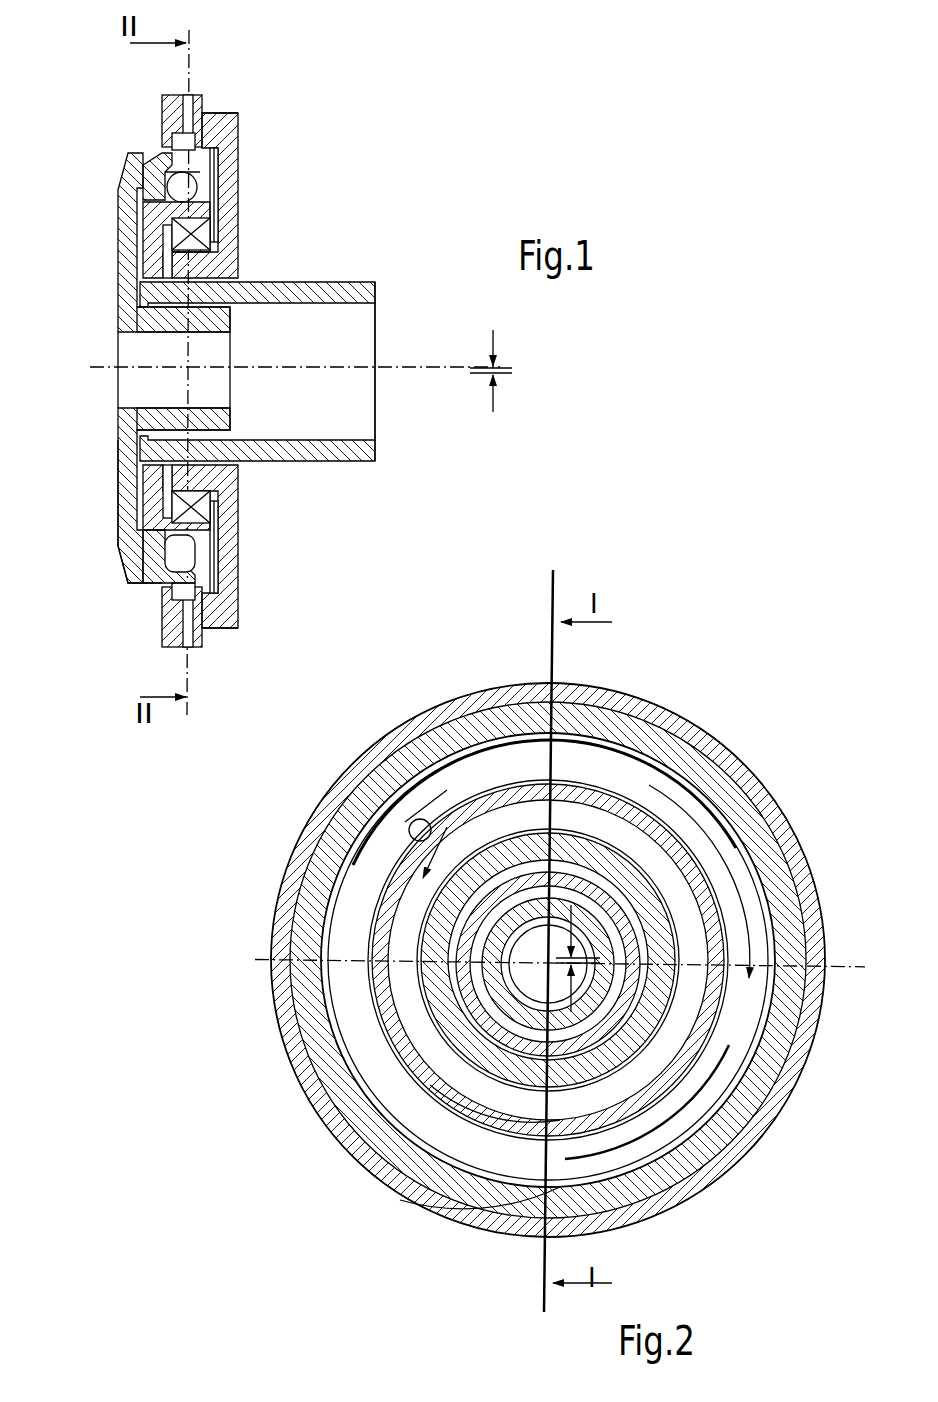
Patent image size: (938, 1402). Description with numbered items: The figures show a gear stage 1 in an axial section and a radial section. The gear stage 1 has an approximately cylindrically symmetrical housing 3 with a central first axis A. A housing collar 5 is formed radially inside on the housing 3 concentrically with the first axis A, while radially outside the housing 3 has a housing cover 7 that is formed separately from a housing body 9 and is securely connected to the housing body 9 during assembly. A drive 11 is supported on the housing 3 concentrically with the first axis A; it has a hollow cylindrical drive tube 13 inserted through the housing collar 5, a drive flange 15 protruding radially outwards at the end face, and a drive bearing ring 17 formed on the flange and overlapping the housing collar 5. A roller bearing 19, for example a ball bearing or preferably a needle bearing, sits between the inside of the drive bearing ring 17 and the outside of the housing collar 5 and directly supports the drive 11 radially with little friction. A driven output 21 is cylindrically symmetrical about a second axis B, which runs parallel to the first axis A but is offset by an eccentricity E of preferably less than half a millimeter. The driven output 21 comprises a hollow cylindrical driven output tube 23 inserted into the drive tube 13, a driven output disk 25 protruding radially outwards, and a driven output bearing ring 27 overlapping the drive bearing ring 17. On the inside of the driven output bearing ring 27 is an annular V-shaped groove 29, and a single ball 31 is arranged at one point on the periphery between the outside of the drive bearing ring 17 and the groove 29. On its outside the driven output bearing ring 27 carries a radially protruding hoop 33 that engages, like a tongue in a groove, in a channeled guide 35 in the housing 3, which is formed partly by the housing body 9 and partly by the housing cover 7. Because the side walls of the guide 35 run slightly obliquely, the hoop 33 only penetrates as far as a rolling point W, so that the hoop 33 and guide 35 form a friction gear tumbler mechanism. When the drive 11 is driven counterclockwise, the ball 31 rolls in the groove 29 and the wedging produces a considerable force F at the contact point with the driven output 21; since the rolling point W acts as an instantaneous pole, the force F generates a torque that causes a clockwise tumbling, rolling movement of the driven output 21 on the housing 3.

In FIG. 1, the gear stage 1 is at (350, 189).
In FIG. 1, the housing 3 is at (225, 105).
In FIG. 2, the housing 3 is at (700, 724).
In FIG. 1, the housing collar 5 is at (205, 268).
In FIG. 2, the housing collar 5 is at (450, 983).
In FIG. 1, the housing cover 7 is at (165, 105).
In FIG. 2, the housing cover 7 is at (545, 1205).
In FIG. 1, the housing body 9 is at (232, 215).
In FIG. 2, the housing body 9 is at (478, 1197).
In FIG. 1, the drive 11 is at (362, 465).
In FIG. 2, the drive 11 is at (609, 788).
In FIG. 1, the drive tube 13 is at (302, 452).
In FIG. 2, the drive tube 13 is at (445, 944).
In FIG. 1, the drive flange 15 is at (150, 495).
In FIG. 1, the drive bearing ring 17 is at (230, 527).
In FIG. 2, the drive bearing ring 17 is at (420, 1108).
In FIG. 1, the roller bearing 19 is at (215, 247).
In FIG. 2, the roller bearing 19 is at (460, 1062).
In FIG. 1, the driven output 21 is at (117, 297).
In FIG. 2, the driven output 21 is at (457, 1172).
In FIG. 1, the driven output tube 23 is at (173, 417).
In FIG. 2, the driven output tube 23 is at (745, 1060).
In FIG. 1, the driven output disk 25 is at (125, 480).
In FIG. 1, the driven output bearing ring 27 is at (155, 585).
In FIG. 2, the driven output bearing ring 27 is at (415, 1117).
In FIG. 1, the groove 29 is at (203, 543).
In FIG. 1, the ball 31 is at (220, 150).
In FIG. 2, the ball 31 is at (408, 830).
In FIG. 1, the hoop 33 is at (182, 152).
In FIG. 1, the guide 35 is at (193, 132).
In FIG. 1, the rolling point W is at (160, 135).
In FIG. 2, the rolling point W is at (520, 717).
In FIG. 1, the first axis A is at (405, 375).
In FIG. 2, the first axis A is at (640, 1040).
In FIG. 1, the second axis B is at (147, 363).
In FIG. 2, the second axis B is at (600, 880).
In FIG. 1, the eccentricity E is at (496, 372).
In FIG. 2, the eccentricity E is at (579, 958).
In FIG. 2, the force F is at (430, 890).